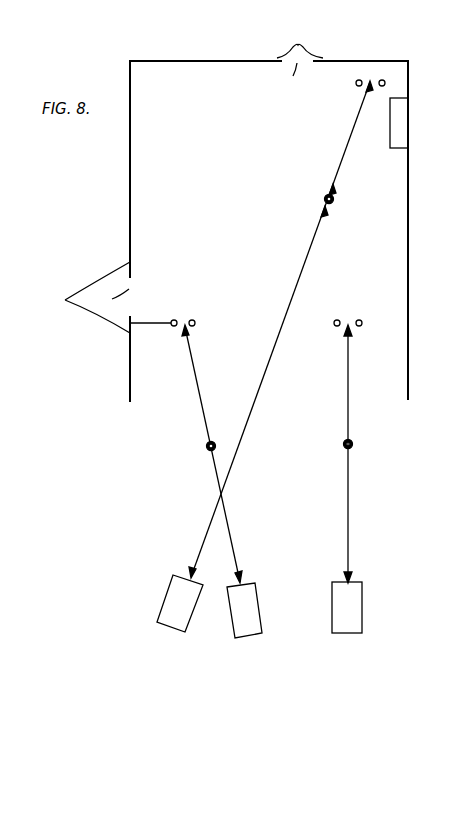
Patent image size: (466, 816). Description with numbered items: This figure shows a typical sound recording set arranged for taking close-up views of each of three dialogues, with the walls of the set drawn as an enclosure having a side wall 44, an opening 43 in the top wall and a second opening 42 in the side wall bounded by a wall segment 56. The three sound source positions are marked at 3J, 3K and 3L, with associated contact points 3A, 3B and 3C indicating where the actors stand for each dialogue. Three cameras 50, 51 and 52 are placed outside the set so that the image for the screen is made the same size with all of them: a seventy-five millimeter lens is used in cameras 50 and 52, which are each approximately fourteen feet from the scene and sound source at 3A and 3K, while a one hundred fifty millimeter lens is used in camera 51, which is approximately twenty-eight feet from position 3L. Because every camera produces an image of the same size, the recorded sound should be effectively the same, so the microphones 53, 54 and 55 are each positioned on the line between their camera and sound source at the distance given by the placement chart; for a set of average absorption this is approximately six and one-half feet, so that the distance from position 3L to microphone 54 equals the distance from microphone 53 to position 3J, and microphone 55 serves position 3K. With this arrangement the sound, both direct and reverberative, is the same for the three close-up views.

The opening in enclosure top wall 43 is at (300, 42).
The microphone 55 is at (366, 444).
The switch contact C 3C is at (357, 79).
The sound source position 3L is at (373, 70).
The switch contact B 3B is at (386, 79).
The microphone 54 is at (323, 199).
The enclosure wall 44 is at (408, 214).
The opening in enclosure side wall 42 is at (84, 297).
The wall segment 56 is at (108, 299).
The sound source position 3J is at (186, 437).
The scene and sound source position 3A is at (172, 327).
The sound source position 3K is at (350, 437).
The microphone 53 is at (205, 446).
The camera 51 is at (167, 629).
The camera 50 is at (250, 637).
The camera 52 is at (349, 634).